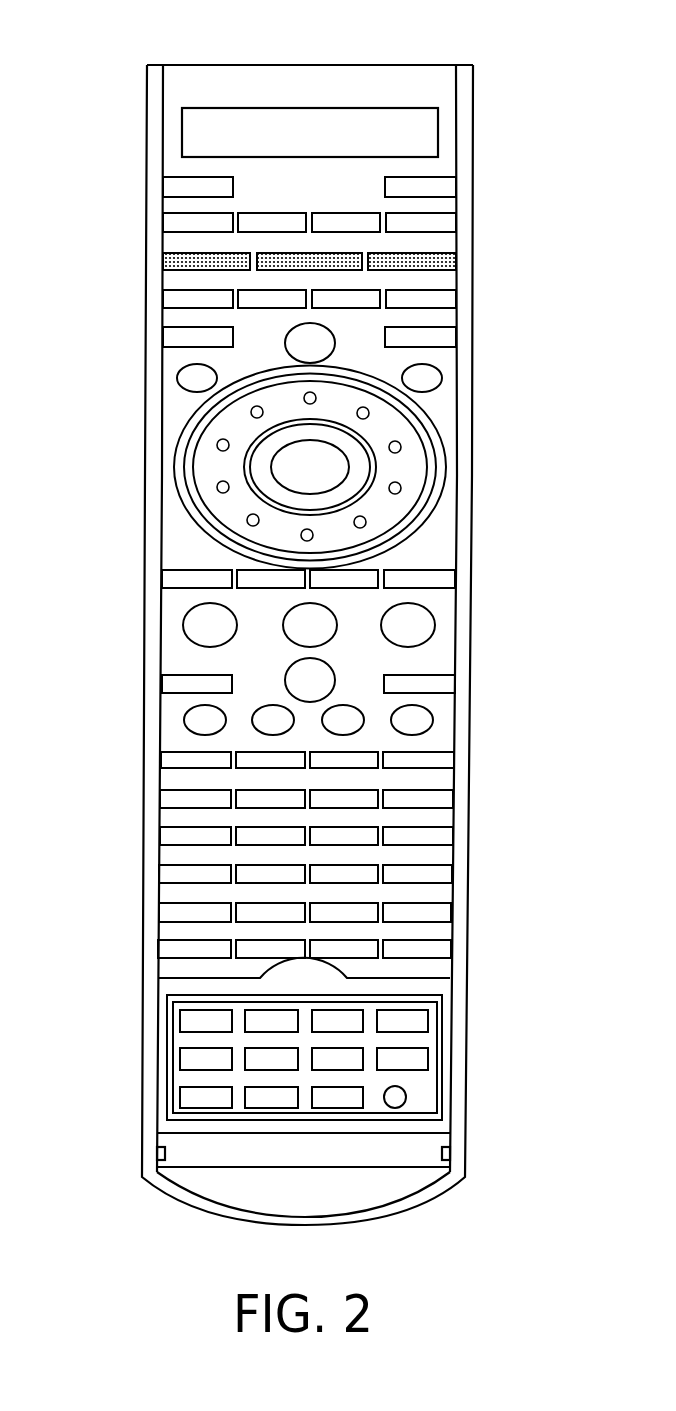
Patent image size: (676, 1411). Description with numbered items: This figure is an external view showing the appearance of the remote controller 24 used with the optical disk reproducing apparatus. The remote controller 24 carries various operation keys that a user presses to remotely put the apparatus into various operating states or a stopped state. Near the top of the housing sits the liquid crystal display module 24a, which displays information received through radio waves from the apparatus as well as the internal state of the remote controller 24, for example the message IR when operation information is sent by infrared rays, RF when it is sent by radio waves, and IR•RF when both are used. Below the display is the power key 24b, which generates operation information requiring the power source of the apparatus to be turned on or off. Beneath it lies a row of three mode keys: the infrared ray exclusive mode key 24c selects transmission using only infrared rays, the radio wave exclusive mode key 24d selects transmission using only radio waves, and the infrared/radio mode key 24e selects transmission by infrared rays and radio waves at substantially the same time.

The remote controller 24 is at (472, 475).
The liquid crystal display module 24a is at (352, 108).
The power key 24b is at (448, 187).
The infrared ray exclusive mode key 24c is at (170, 262).
The radio wave exclusive mode key 24d is at (285, 260).
The infrared/radio mode key 24e is at (448, 262).